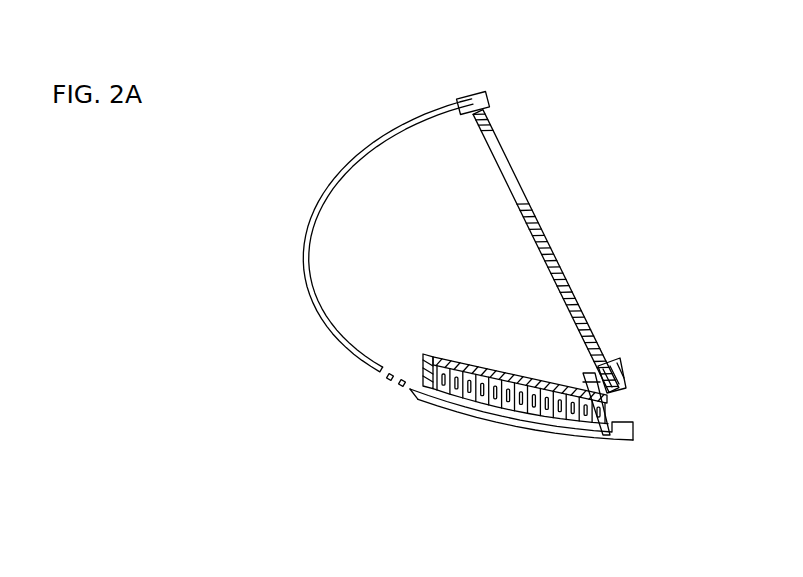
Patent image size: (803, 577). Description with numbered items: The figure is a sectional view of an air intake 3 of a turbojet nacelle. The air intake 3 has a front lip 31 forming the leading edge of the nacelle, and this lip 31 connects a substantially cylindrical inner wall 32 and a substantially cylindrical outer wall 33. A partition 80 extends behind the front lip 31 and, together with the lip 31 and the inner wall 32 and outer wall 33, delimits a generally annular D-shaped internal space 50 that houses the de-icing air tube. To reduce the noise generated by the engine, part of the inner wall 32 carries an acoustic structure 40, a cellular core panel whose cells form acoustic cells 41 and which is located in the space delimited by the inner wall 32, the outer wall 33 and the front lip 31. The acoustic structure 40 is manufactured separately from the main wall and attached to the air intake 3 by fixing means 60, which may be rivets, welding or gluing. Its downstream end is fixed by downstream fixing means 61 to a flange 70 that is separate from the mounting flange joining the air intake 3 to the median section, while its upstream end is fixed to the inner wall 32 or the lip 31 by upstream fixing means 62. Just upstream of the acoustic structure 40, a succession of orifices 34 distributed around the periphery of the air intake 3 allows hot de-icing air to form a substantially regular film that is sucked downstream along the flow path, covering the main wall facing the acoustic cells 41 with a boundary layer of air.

The air intake 3 is at (343, 128).
The front lip 31 is at (304, 252).
The inner wall 32 is at (603, 436).
The outer wall 33 is at (470, 92).
The orifices 34 is at (387, 402).
The acoustic structure 40 is at (533, 362).
The acoustic cells 41 is at (484, 406).
The internal space 50 is at (425, 177).
The fixing means 60 is at (616, 353).
The downstream fixing means 61 is at (614, 398).
The upstream fixing means 62 is at (428, 352).
The flange 70 is at (616, 425).
The partition 80 is at (519, 183).